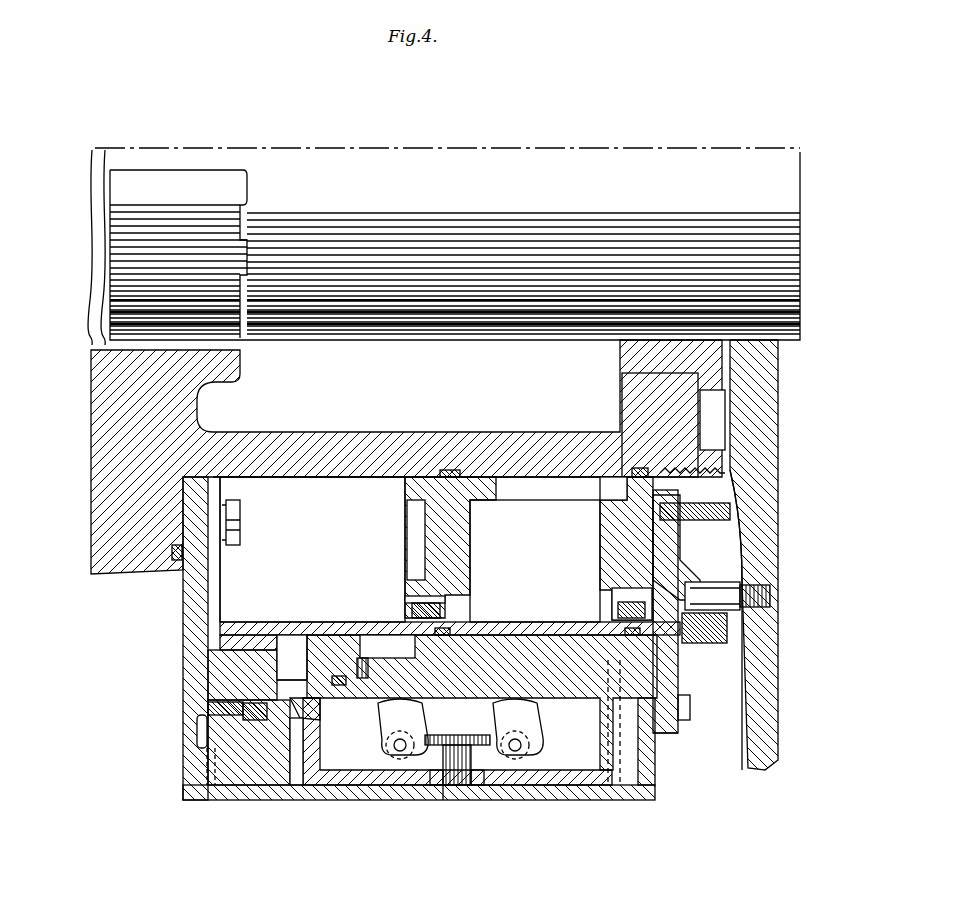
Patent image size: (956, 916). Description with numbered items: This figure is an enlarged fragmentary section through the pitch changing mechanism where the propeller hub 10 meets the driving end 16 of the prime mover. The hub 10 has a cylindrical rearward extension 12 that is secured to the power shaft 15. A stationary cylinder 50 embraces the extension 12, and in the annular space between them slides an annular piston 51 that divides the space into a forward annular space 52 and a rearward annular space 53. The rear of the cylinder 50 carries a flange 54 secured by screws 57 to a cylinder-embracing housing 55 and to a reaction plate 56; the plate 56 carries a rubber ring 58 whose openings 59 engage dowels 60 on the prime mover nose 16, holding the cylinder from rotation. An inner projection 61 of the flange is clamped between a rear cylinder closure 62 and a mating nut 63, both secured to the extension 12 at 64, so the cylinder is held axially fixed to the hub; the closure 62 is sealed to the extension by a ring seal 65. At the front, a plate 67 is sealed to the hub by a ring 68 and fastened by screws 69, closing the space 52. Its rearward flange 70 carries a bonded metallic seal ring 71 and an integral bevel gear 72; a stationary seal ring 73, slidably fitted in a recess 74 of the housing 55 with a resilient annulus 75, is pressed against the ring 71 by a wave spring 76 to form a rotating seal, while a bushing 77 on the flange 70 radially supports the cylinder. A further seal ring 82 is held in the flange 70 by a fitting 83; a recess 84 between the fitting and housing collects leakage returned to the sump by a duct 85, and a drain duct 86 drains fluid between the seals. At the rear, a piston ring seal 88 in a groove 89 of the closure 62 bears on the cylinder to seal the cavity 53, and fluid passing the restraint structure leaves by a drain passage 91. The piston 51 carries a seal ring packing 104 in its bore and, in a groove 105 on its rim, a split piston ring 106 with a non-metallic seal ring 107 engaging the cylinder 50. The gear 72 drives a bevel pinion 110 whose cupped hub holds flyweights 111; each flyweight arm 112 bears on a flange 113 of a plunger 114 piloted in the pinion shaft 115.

The propeller hub 10 is at (95, 523).
The cylindrical rearward extension 12 is at (355, 478).
The power shaft 15 is at (444, 246).
The driving end of prime mover 16 is at (768, 510).
The cylinder 50 is at (540, 622).
The annular piston 51 is at (470, 550).
The forward annular space 52 is at (312, 549).
The rearward annular space 53 is at (535, 561).
The flange 54 is at (665, 735).
The cylinder-embracing housing 55 is at (655, 790).
The reaction plate 56 is at (678, 672).
The screws 57 is at (690, 712).
The rubber ring 58 is at (700, 640).
The openings 59 is at (690, 592).
The dowels 60 is at (735, 613).
The inner projection of cylinder plate 61 is at (652, 548).
The rear cylinder closure 62 is at (600, 508).
The mating nut 63 is at (700, 513).
The securing location on hub extension 64 is at (700, 476).
The ring seal 65 is at (640, 470).
The plate 67 is at (183, 637).
The ring 68 is at (178, 560).
The screws 69 is at (240, 520).
The rearwardly extending flange 70 is at (215, 690).
The metallic seal ring 71 is at (292, 667).
The bevel gear 72 is at (318, 712).
The stationary coacting seal ring 73 is at (292, 657).
The recess 74 is at (375, 680).
The resilient sealing annulus 75 is at (338, 676).
The wave spring 76 is at (362, 658).
The bushing 77 is at (240, 640).
The seal ring 82 is at (258, 720).
The fitting 83 is at (183, 716).
The recess 84 is at (197, 745).
The duct 85 is at (207, 800).
The drain duct 86 is at (297, 800).
The piston ring seal 88 is at (620, 612).
The groove 89 is at (625, 595).
The drain passage 91 is at (614, 800).
The seal ring packing 104 is at (450, 468).
The piston ring groove 105 is at (445, 603).
The split piston ring 106 is at (440, 612).
The non-metallic seal ring 107 is at (410, 590).
The bevel pinion 110 is at (600, 718).
The flyweights 111 is at (538, 730).
The arm 112 is at (484, 778).
The flange 113 is at (457, 725).
The plunger 114 is at (455, 790).
The pinion shaft 115 is at (440, 790).